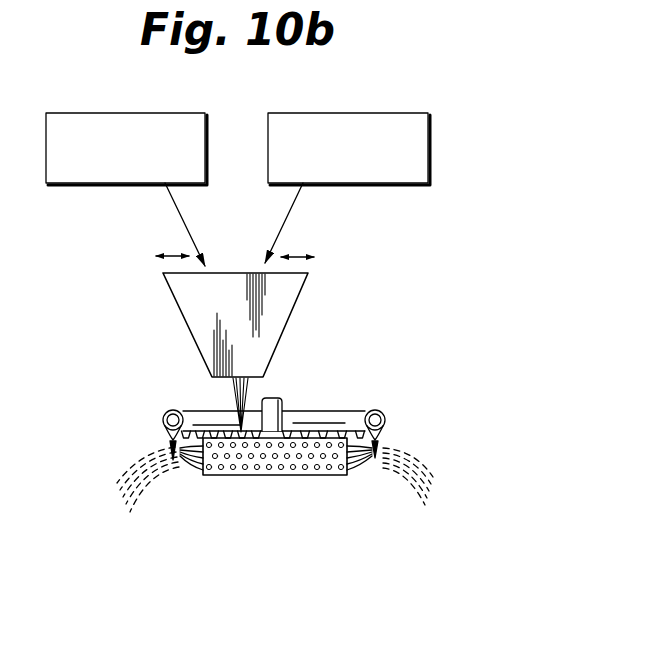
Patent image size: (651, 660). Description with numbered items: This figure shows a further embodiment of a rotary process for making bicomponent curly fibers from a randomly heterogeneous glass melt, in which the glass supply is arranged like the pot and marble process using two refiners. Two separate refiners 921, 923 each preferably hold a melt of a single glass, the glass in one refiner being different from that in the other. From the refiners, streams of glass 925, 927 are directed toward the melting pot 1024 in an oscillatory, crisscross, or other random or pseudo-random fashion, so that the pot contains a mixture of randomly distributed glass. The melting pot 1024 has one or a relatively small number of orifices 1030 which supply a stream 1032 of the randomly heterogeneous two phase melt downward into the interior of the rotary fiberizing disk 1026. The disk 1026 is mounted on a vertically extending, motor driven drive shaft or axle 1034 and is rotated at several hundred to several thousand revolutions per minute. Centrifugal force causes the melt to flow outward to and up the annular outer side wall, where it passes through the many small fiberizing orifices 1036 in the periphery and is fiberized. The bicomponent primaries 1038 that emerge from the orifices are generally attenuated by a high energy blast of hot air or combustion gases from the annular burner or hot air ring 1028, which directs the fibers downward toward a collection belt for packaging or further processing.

The refiner 921 is at (112, 183).
The refiner 923 is at (362, 183).
The stream of glass 925 is at (178, 218).
The stream of glass 927 is at (292, 217).
The melting pot 1024 is at (283, 335).
The rotary fiberizing disk 1026 is at (308, 478).
The annular burner or hot air ring 1028 is at (334, 411).
The orifices 1030 is at (223, 378).
The stream of melt 1032 is at (237, 393).
The drive shaft or axle 1034 is at (283, 400).
The fiberizing orifices 1036 is at (378, 447).
The bicomponent primaries 1038 is at (390, 478).